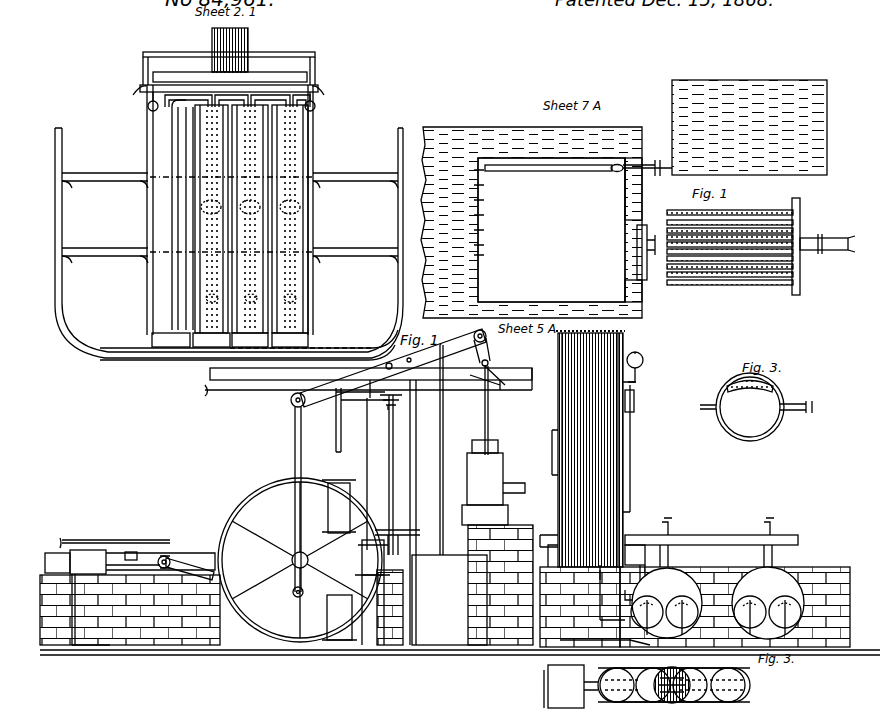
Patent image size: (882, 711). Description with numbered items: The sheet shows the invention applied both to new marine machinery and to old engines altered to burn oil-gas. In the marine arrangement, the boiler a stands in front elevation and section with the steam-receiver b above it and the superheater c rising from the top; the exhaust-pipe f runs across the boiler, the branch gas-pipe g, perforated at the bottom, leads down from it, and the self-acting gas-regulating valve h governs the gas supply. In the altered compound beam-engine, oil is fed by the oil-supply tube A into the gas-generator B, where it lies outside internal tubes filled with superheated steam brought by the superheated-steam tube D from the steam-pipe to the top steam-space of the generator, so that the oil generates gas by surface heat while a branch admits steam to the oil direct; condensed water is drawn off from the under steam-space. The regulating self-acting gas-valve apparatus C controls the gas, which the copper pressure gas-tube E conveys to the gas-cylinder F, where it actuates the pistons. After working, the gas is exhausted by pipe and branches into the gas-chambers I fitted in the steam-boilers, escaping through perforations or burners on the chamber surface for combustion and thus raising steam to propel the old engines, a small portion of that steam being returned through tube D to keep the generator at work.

In FIG. 5, the boiler a is at (244, 219).
In FIG. 1, the boiler a is at (608, 564).
In FIG. 5, the steam-receiver b is at (229, 68).
In FIG. 5, the superheater c is at (234, 50).
In FIG. 3, the superheater c is at (761, 246).
In FIG. 5, the exhaust-pipe f is at (228, 91).
In FIG. 5, the branch gas-pipe g is at (180, 215).
In FIG. 5, the self-acting gas-regulating valve h is at (252, 294).
In FIG. 1, the oil-supply tube A is at (551, 378).
In FIG. 1, the gas-generator B is at (702, 239).
In FIG. 1, the regulating self-acting gas-valve apparatus C is at (578, 334).
In FIG. 1, the superheated-steam tube D is at (635, 387).
In FIG. 3, the superheated-steam tube D is at (756, 407).
In FIG. 1, the copper pressure gas-tube E is at (345, 487).
In FIG. 1, the gas-cylinder F is at (130, 591).
In FIG. 3, the gas-cylinder F is at (647, 681).
In FIG. 1, the gas-chambers I is at (460, 566).
In FIG. 3, the gas-chambers I is at (672, 689).